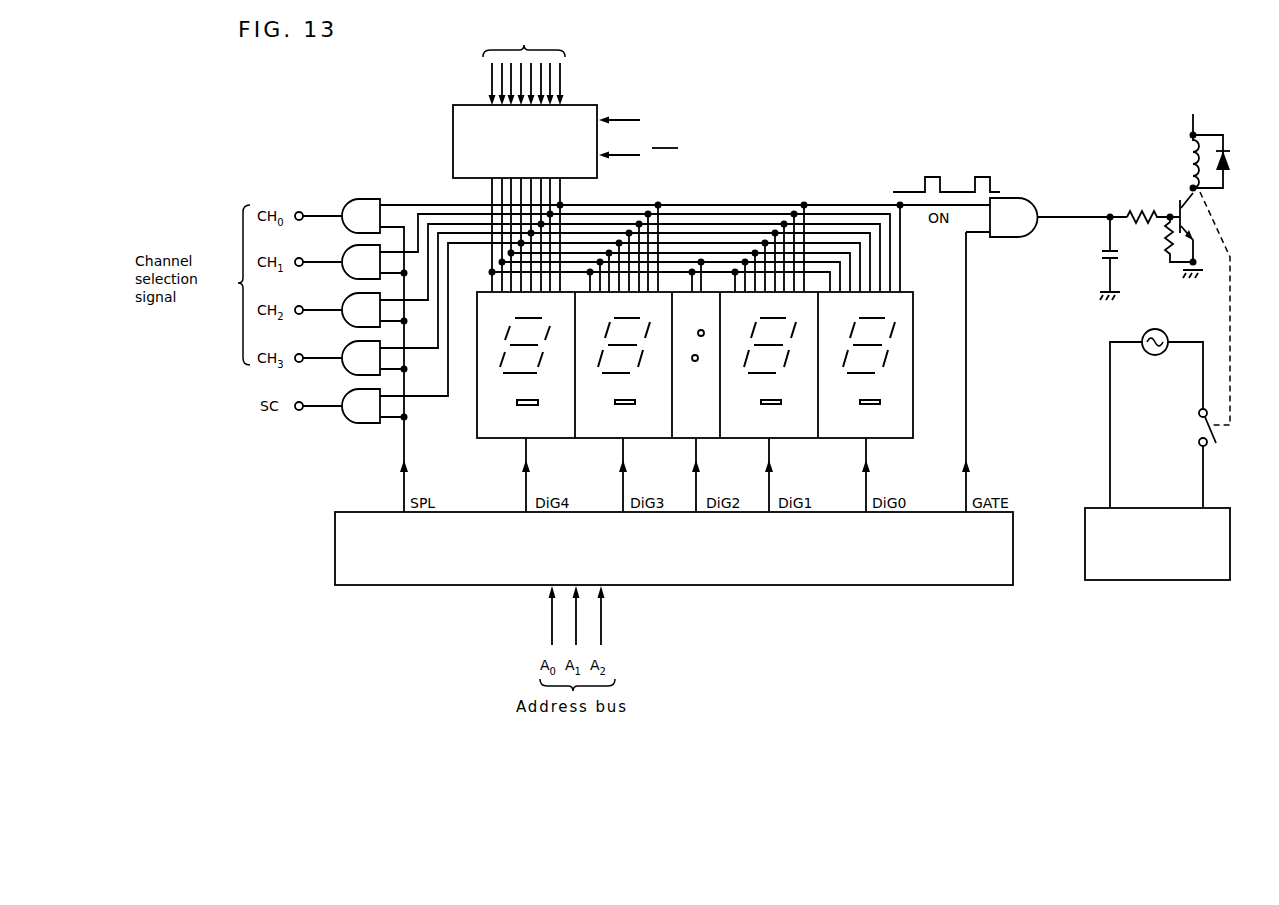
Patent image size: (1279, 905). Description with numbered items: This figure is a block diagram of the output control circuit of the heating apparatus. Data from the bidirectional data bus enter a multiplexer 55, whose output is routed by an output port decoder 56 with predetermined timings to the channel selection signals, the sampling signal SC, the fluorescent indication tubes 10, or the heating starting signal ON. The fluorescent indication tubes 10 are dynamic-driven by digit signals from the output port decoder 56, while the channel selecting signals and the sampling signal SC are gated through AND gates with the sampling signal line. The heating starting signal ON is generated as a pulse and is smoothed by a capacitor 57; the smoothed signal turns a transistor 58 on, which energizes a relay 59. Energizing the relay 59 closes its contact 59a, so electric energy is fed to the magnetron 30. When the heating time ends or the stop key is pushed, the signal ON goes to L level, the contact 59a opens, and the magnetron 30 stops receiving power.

The multiplexer 55 is at (453, 158).
The fluorescent indication tubes 10 is at (477, 429).
The output port decoder 56 is at (390, 585).
The capacitor 57 is at (1098, 255).
The transistor 58 is at (1192, 222).
The relay 59 is at (1190, 168).
The contact 59a is at (1196, 425).
The magnetron 30 is at (1085, 572).